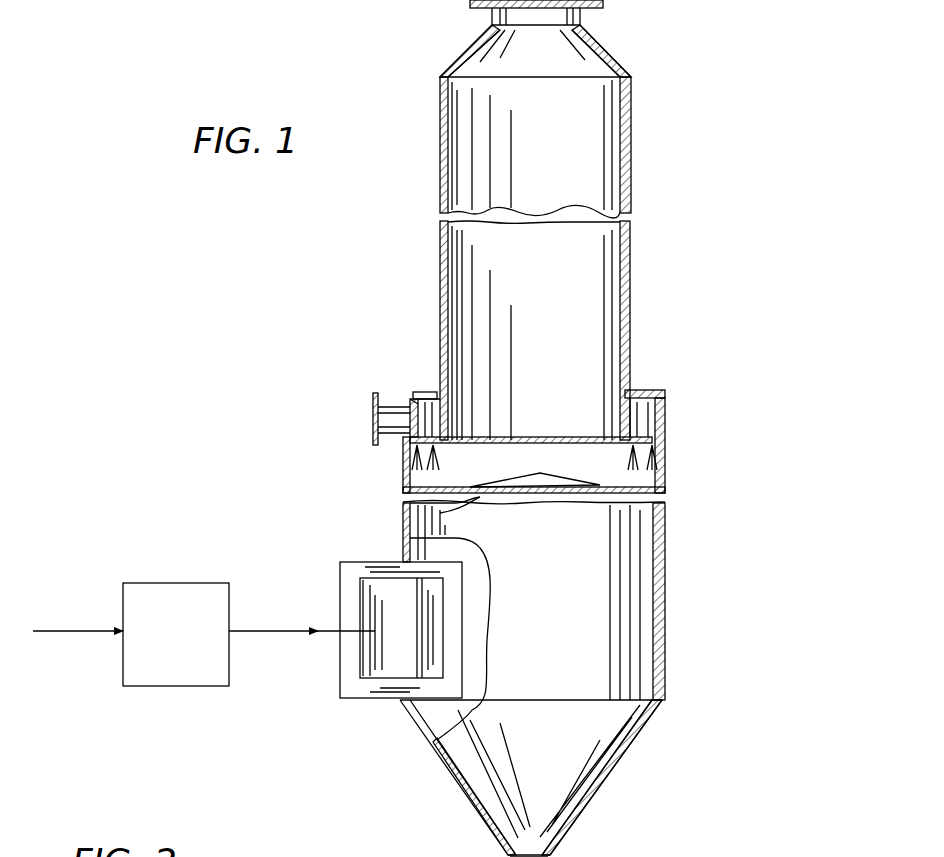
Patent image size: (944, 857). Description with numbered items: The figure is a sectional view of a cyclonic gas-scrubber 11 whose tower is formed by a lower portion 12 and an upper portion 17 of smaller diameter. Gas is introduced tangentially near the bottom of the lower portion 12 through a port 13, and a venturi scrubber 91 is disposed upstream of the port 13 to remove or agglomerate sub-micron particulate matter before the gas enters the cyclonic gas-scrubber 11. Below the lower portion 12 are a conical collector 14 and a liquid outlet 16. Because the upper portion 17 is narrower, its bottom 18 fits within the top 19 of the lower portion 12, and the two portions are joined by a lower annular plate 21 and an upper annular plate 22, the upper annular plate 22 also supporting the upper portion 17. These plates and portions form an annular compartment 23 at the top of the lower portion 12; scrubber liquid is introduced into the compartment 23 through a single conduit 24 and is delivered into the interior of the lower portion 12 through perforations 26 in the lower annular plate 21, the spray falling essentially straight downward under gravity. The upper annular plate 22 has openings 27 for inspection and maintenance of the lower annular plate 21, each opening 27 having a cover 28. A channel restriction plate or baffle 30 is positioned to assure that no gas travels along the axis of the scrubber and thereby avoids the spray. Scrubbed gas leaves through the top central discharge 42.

The cyclonic gas-scrubber 11 is at (428, 122).
The top central discharge 42 is at (585, 15).
The upper portion 17 is at (628, 325).
The cover 28 is at (428, 395).
The upper annular plate 22 is at (410, 392).
The opening 27 is at (405, 402).
The conduit 24 is at (378, 438).
The lower portion 12 is at (402, 468).
The bottom of upper portion 18 is at (630, 440).
The lower annular plate 21 is at (432, 450).
The top of lower portion 19 is at (660, 393).
The annular compartment 23 is at (665, 418).
The perforations 26 is at (660, 448).
The conical collector 14 is at (448, 773).
The liquid outlet 16 is at (558, 856).
The channel restriction plate or baffle 30 is at (440, 513).
The port 13 is at (360, 645).
The venturi scrubber 91 is at (190, 650).